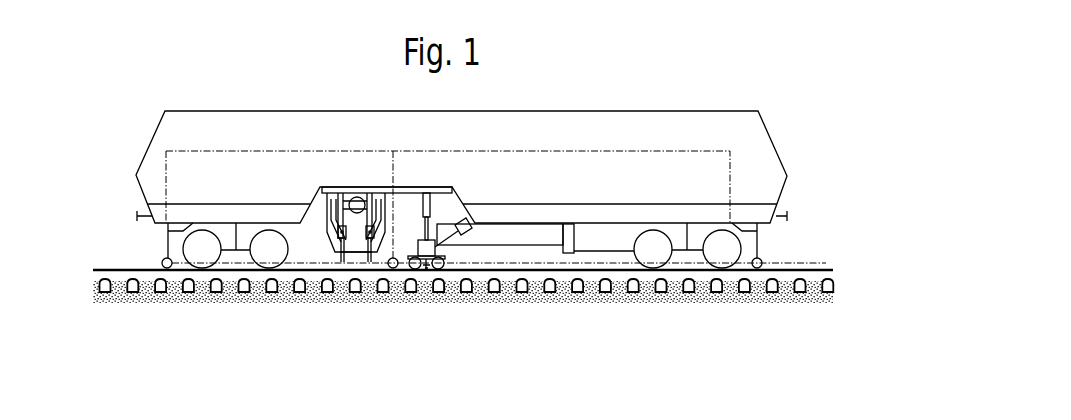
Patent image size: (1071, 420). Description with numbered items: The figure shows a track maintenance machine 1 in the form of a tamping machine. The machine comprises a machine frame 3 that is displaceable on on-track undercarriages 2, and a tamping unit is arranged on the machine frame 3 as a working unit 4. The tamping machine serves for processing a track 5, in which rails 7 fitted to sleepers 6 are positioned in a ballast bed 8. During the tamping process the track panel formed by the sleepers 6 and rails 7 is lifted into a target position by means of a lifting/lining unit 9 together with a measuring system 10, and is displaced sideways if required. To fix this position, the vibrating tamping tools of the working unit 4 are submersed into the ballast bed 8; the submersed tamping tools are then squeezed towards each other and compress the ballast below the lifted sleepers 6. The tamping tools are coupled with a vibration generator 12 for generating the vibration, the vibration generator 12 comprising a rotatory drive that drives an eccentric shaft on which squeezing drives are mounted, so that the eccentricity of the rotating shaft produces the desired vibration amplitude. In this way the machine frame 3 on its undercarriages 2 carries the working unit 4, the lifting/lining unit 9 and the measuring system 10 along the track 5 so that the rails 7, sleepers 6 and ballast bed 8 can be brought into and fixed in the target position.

The track maintenance machine 1 is at (755, 61).
The on-track undercarriages 2 is at (223, 252).
The machine frame 3 is at (492, 212).
The working unit 4 is at (328, 248).
The track 5 is at (790, 306).
The sleepers 6 is at (553, 304).
The rails 7 is at (808, 273).
The ballast bed 8 is at (140, 304).
The lifting/lining unit 9 is at (430, 268).
The measuring system 10 is at (155, 265).
The vibration generator 12 is at (350, 230).